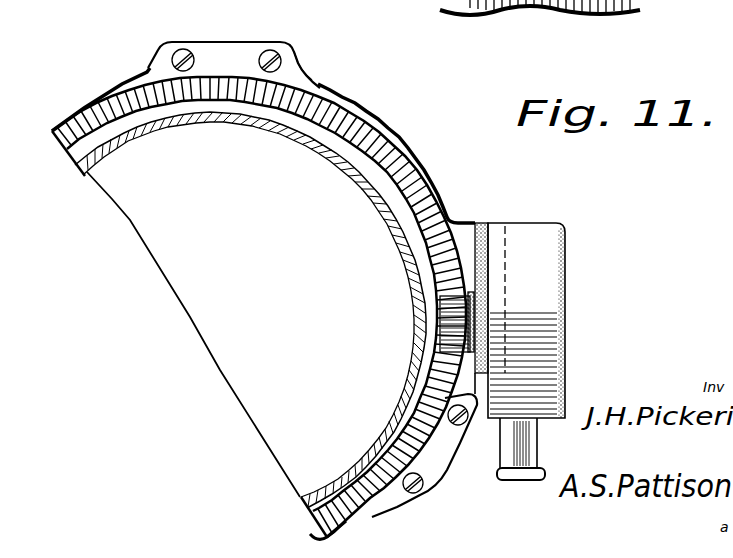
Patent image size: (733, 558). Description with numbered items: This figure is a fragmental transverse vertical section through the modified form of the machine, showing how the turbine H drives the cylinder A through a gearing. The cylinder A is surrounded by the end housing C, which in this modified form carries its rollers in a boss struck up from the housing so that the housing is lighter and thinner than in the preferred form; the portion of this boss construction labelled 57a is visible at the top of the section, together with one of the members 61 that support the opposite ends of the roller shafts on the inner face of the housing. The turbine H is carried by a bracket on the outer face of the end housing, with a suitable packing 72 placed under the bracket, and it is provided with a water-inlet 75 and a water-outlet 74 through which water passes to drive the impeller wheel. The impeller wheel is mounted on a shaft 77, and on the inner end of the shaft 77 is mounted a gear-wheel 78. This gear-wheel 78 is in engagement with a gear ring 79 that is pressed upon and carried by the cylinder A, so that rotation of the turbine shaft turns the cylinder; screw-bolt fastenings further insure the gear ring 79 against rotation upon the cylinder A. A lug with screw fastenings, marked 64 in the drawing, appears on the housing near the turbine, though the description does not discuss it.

The member 61 is at (227, 53).
The boss 57a is at (293, 62).
The end housing C is at (380, 129).
The cylinder A is at (217, 123).
The gear ring 79 is at (413, 217).
The packing 72 is at (487, 221).
The shaft 77 is at (477, 318).
The gear-wheel 78 is at (445, 318).
The turbine H is at (552, 252).
The water-inlet 75 is at (560, 390).
The water-outlet 74 is at (527, 450).
The bracket 64 is at (424, 455).